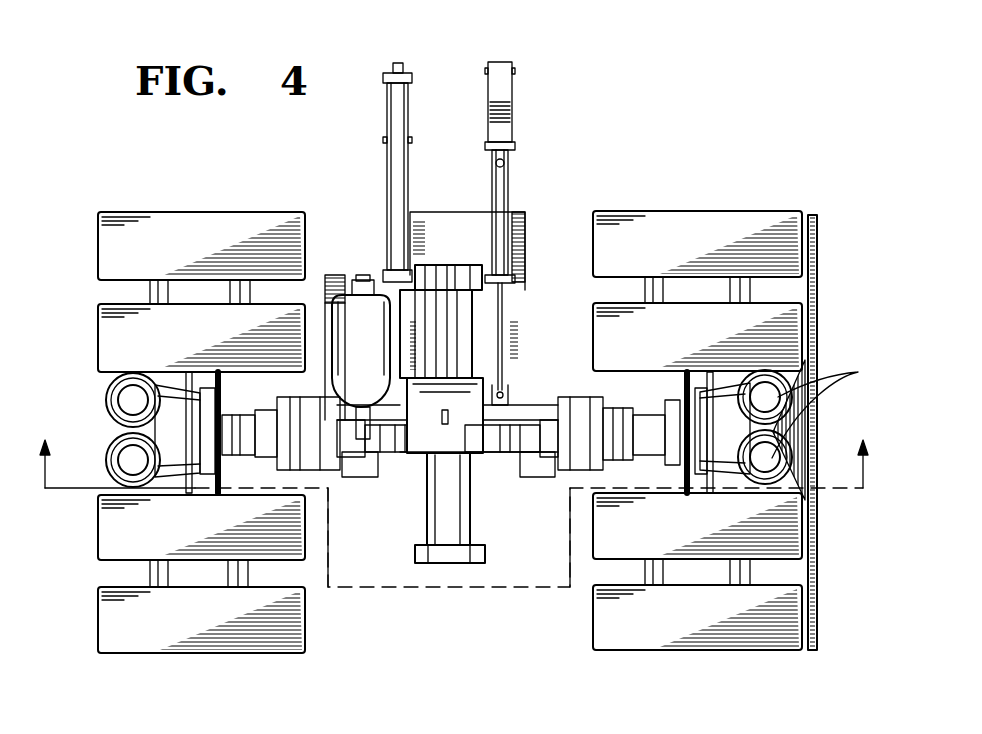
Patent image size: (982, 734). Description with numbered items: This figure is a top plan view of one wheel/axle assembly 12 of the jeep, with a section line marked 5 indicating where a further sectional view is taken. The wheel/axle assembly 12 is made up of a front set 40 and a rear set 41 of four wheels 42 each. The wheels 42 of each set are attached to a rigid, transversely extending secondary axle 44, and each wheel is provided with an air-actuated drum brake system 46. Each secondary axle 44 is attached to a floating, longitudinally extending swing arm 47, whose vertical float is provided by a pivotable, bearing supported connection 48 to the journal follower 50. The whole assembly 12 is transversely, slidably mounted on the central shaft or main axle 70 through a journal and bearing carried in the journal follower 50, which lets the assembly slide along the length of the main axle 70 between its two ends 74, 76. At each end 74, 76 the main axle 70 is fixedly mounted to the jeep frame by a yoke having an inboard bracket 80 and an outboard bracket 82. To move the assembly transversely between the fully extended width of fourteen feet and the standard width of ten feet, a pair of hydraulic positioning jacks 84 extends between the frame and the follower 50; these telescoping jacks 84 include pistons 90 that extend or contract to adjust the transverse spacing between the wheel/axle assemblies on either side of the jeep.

The wheel/axle assembly 12 is at (350, 615).
The front set of wheels 40 is at (112, 198).
The rear set of wheels 41 is at (778, 197).
The wheel 42 is at (450, 432).
The secondary axle 44 is at (220, 399).
The drum brake system 46 is at (108, 452).
The swing arm 47 is at (565, 482).
The pivotable bearing supported connection 48 is at (533, 479).
The journal follower 50 is at (442, 452).
The main axle 70 is at (452, 488).
The end of main axle 74 is at (425, 545).
The end of main axle 76 is at (445, 265).
The inboard bracket 80 is at (471, 265).
The outboard bracket 82 is at (442, 563).
The hydraulic positioning jack 84 is at (387, 110).
The piston 90 is at (512, 345).
The section line 5 is at (453, 453).